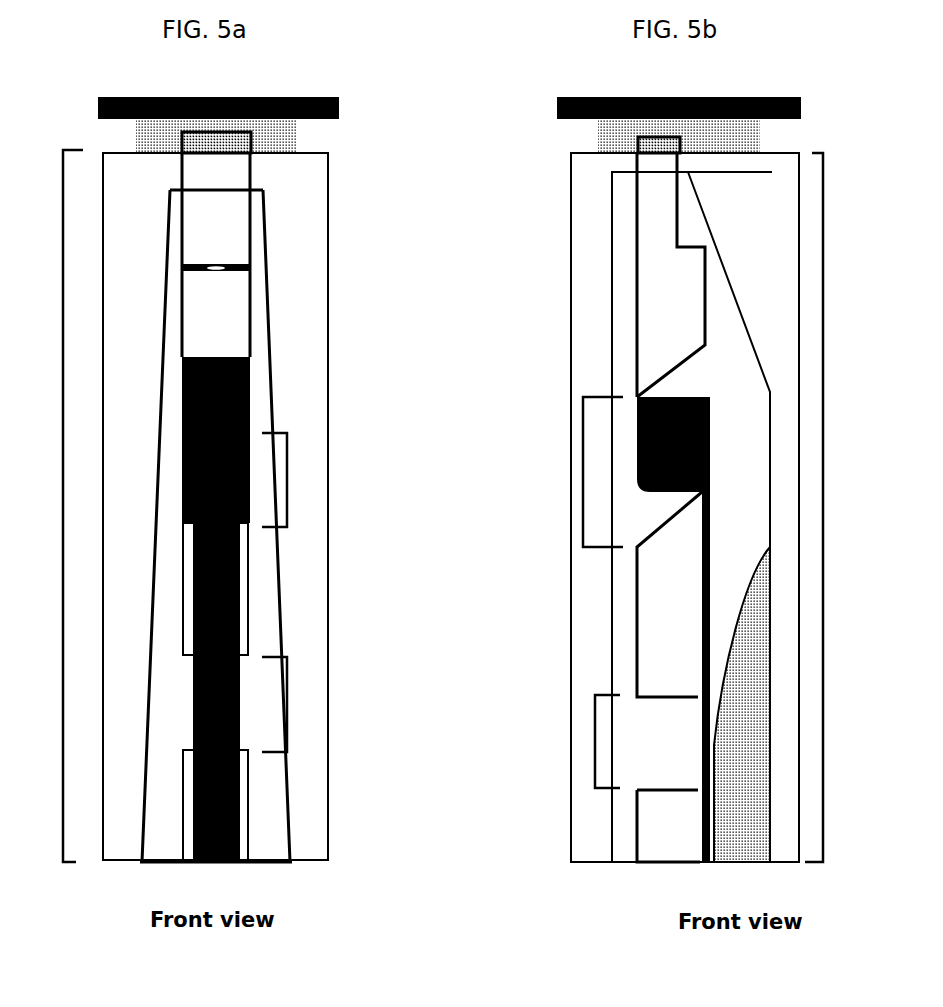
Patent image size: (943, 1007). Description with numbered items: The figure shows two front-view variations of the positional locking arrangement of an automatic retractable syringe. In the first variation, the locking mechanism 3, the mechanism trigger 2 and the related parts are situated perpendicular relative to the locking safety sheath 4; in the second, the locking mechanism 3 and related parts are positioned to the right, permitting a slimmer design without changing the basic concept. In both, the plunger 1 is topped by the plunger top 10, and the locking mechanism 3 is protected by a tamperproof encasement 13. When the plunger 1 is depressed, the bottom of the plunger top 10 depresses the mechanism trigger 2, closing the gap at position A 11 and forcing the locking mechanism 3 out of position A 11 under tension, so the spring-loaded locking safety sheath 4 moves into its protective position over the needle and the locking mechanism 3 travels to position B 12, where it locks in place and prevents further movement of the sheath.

In FIG. 5A, the plunger top 10 is at (345, 116).
In FIG. 5B, the plunger top 10 is at (548, 117).
In FIG. 5A, the plunger 1 is at (307, 135).
In FIG. 5B, the plunger 1 is at (594, 135).
In FIG. 5A, the mechanism trigger 2 is at (255, 285).
In FIG. 5B, the mechanism trigger 2 is at (632, 272).
In FIG. 5A, the locking mechanism 3 is at (180, 467).
In FIG. 5B, the locking mechanism 3 is at (692, 393).
In FIG. 5A, the locking safety sheath 4 is at (63, 508).
In FIG. 5B, the locking safety sheath 4 is at (823, 528).
In FIG. 5A, the position A 11 is at (290, 452).
In FIG. 5B, the position A 11 is at (583, 452).
In FIG. 5A, the position B 12 is at (289, 690).
In FIG. 5B, the position B 12 is at (595, 745).
In FIG. 5A, the tamperproof encasement 13 is at (280, 597).
In FIG. 5B, the tamperproof encasement 13 is at (606, 617).